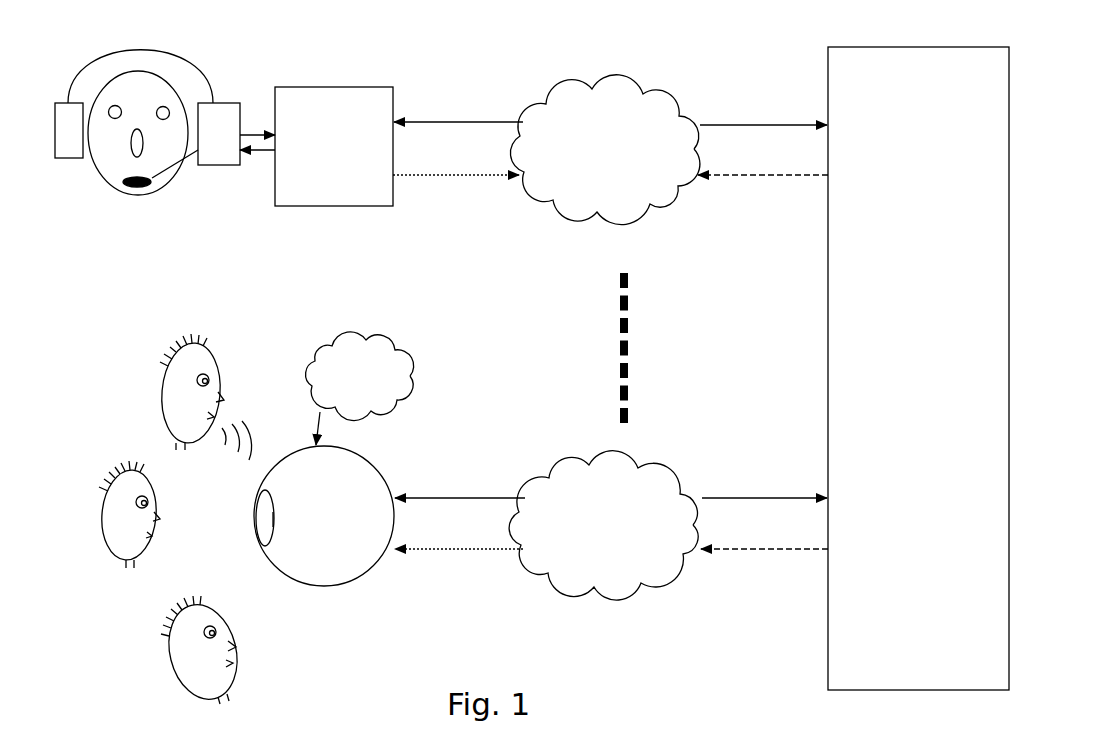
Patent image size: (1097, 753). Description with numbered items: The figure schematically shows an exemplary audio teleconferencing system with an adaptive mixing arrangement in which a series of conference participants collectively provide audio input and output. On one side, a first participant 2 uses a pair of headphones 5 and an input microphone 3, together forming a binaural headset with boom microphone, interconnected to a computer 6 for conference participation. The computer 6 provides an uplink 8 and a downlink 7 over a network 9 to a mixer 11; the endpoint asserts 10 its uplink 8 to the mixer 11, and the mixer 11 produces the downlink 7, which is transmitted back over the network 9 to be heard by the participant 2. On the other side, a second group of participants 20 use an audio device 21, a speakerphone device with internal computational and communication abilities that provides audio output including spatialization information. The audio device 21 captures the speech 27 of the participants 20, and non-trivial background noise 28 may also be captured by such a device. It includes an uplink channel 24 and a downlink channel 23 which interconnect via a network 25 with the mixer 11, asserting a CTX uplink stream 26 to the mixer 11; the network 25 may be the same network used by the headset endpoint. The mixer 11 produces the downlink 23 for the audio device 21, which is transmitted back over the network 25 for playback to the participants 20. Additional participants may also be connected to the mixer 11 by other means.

The first participant 2 is at (178, 173).
The input microphone 3 is at (142, 196).
The headphones 5 is at (214, 76).
The computer 6 is at (349, 86).
The downlink 7 is at (470, 83).
The uplink 8 is at (473, 202).
The network 9 is at (641, 69).
The assertion of DTX uplink stream 10 is at (756, 105).
The mixer 11 is at (1013, 58).
The second group of participants 20 is at (71, 429).
The audio device 21 is at (372, 444).
The downlink channel 23 is at (484, 467).
The uplink channel 24 is at (449, 558).
The network 25 is at (639, 585).
The CTX uplink stream 26 is at (755, 559).
The speech 27 is at (244, 414).
The noise 28 is at (314, 334).